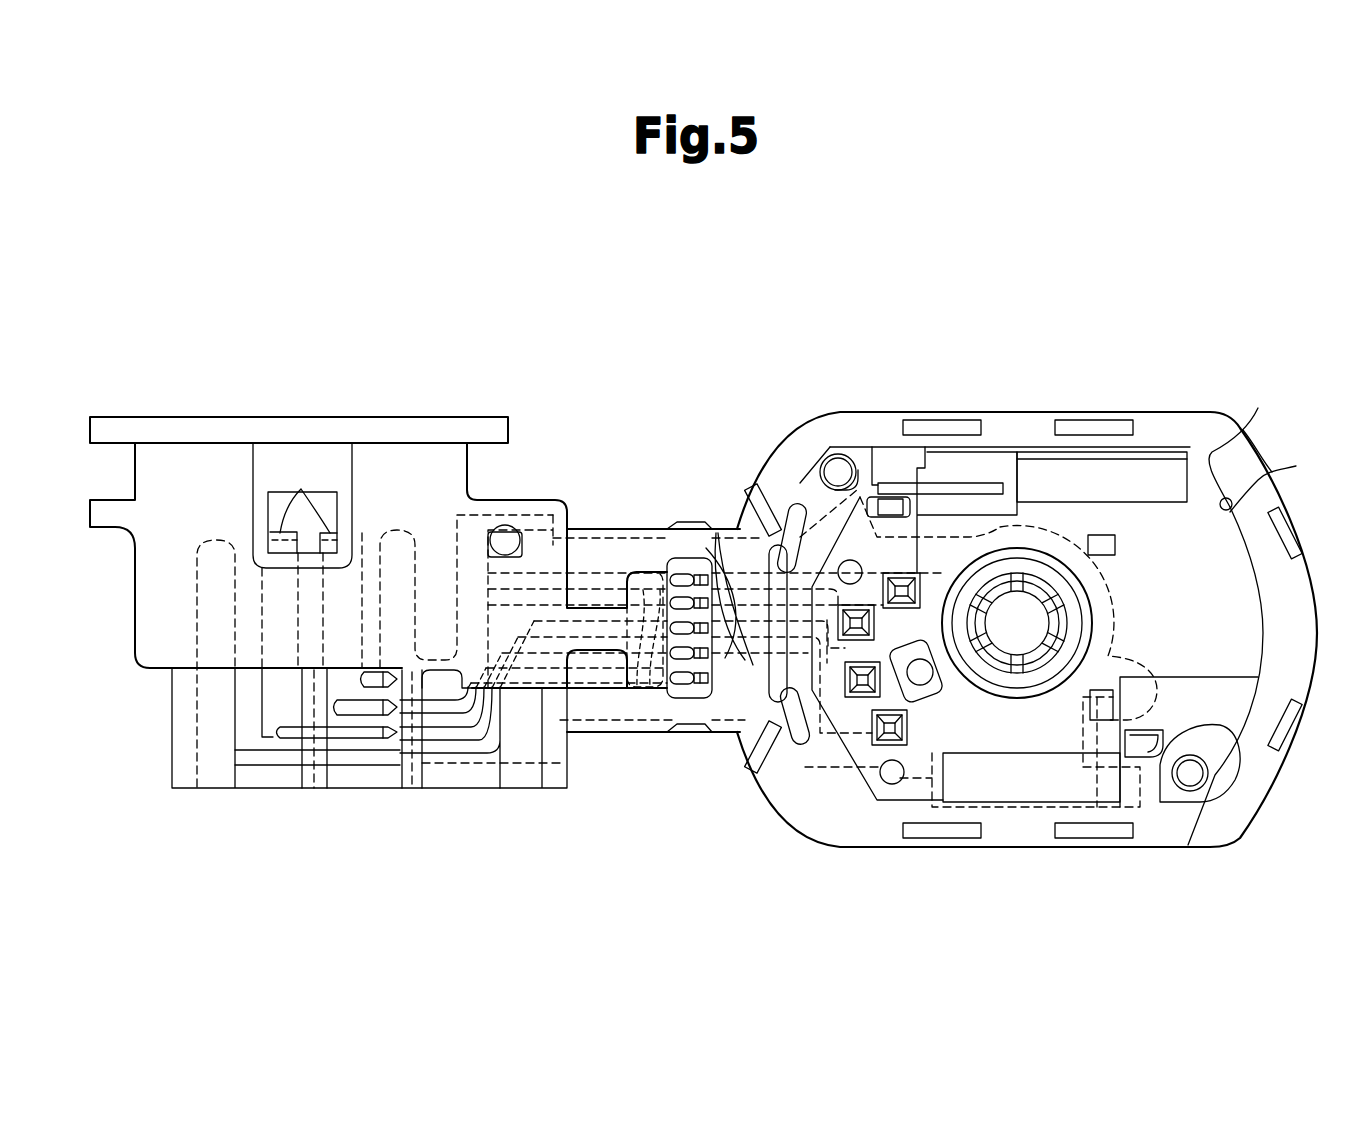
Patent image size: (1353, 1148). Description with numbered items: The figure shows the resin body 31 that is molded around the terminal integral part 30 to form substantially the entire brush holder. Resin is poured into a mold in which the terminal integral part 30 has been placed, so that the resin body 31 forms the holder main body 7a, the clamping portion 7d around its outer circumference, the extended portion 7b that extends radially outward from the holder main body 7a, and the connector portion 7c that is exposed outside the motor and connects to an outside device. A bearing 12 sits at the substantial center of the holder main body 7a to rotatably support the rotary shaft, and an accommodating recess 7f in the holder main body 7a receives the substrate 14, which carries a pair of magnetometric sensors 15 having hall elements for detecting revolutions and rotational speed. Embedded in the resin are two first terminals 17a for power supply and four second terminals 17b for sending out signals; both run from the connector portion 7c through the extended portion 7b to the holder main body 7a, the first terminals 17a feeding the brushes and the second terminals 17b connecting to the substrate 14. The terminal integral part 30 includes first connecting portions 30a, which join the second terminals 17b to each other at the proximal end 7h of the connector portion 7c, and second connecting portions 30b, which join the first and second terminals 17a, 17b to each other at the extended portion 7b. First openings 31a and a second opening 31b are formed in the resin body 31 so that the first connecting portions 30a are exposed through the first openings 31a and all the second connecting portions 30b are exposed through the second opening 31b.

The holder main body 7a is at (1252, 422).
The extended portion 7b is at (607, 525).
The connector portion 7c is at (405, 418).
The clamping portion 7d is at (1150, 418).
The accommodating recess 7f is at (1279, 477).
The proximal end 7h is at (178, 790).
The bearing 12 is at (1048, 622).
The substrate 14 is at (1100, 742).
The magnetometric sensors 15 is at (1117, 547).
The first terminals 17a is at (217, 548).
The second terminals 17b is at (302, 492).
The terminal integral part 30 is at (460, 778).
The first connecting portions 30a is at (333, 736).
The second connecting portions 30b is at (718, 533).
The resin body 31 is at (1144, 319).
The first openings 31a is at (237, 775).
The second opening 31b is at (655, 529).